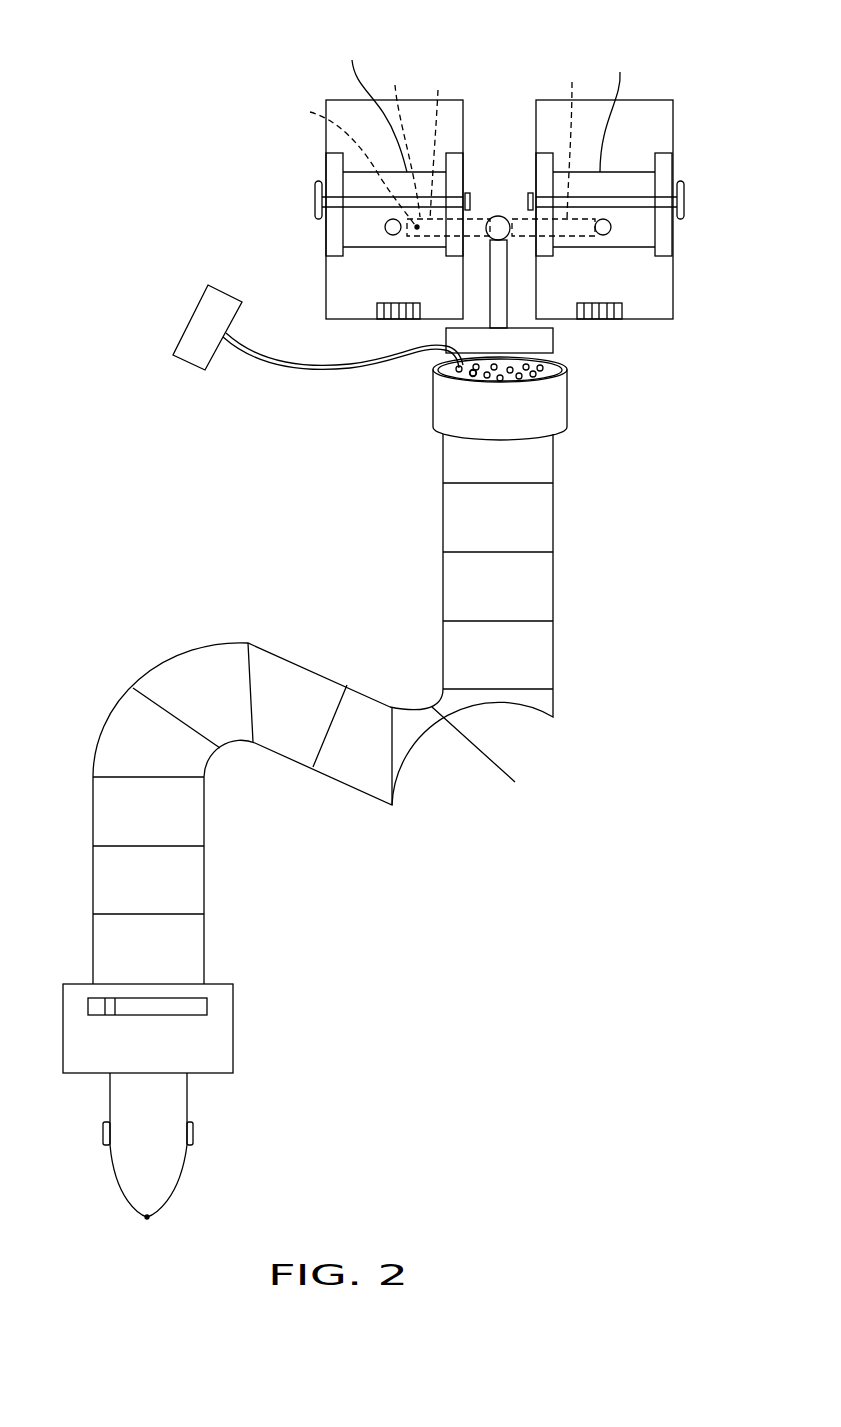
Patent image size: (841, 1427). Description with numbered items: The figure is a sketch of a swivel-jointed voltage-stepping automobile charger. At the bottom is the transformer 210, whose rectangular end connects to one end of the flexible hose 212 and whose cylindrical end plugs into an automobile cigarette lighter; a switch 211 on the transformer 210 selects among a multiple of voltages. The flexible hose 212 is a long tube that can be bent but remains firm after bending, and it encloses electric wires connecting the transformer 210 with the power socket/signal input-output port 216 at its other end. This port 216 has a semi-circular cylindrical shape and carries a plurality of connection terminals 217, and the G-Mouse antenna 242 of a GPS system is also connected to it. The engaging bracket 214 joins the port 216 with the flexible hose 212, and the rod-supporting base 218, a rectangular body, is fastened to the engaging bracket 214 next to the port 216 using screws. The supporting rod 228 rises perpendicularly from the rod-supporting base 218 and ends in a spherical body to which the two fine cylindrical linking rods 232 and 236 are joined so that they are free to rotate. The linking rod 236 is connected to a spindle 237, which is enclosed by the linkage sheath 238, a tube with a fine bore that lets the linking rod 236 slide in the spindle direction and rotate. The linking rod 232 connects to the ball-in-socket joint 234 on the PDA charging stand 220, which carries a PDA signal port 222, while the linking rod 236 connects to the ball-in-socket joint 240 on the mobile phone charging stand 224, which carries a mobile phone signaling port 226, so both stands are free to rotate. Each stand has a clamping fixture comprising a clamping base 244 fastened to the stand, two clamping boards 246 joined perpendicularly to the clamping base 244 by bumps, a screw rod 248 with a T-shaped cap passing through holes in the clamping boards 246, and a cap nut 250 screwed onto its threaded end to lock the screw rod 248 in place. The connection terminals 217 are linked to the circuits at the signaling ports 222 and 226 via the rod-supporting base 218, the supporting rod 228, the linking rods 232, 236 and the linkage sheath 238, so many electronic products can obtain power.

The transformer 210 is at (215, 1037).
The switch 211 is at (197, 1007).
The flexible hose 212 is at (553, 592).
The engaging bracket 214 is at (540, 417).
The power socket/signal input-output port 216 is at (563, 367).
The connection terminals 217 is at (472, 373).
The rod-supporting base 218 is at (543, 343).
The PDA charging stand 220 is at (656, 99).
The PDA signal port 222 is at (625, 310).
The mobile phone charging stand 224 is at (458, 100).
The mobile phone signaling port 226 is at (377, 306).
The supporting rod 228 is at (503, 290).
The linking rod 232 is at (572, 136).
The ball-in-socket joint 234 is at (611, 228).
The linking rod 236 is at (442, 139).
The spindle 237 is at (342, 159).
The linkage sheath 238 is at (398, 135).
The ball-in-socket joint 240 is at (385, 223).
The G-Mouse antenna 242 is at (170, 341).
The clamping base 244 is at (486, 100).
The clamping boards 246 is at (330, 168).
The screw rod 248 is at (315, 190).
The cap nut 250 is at (528, 193).